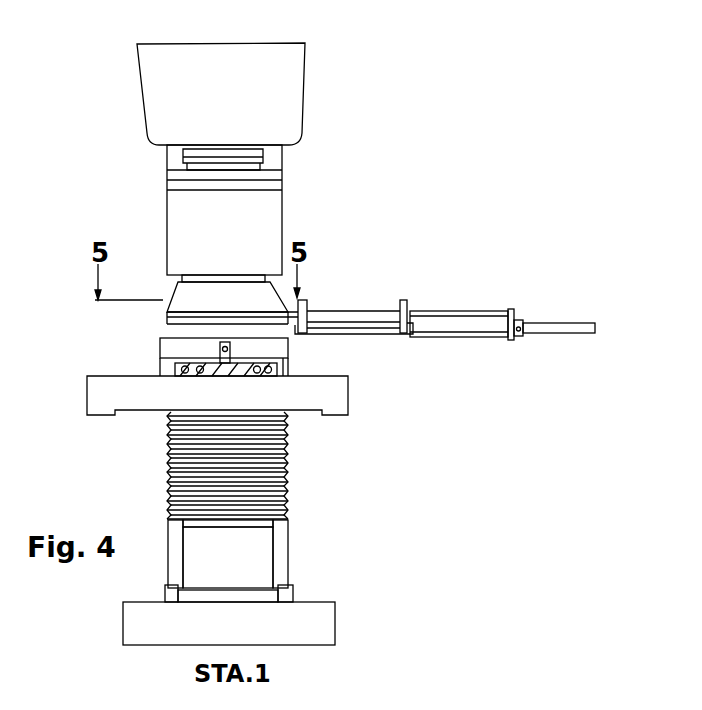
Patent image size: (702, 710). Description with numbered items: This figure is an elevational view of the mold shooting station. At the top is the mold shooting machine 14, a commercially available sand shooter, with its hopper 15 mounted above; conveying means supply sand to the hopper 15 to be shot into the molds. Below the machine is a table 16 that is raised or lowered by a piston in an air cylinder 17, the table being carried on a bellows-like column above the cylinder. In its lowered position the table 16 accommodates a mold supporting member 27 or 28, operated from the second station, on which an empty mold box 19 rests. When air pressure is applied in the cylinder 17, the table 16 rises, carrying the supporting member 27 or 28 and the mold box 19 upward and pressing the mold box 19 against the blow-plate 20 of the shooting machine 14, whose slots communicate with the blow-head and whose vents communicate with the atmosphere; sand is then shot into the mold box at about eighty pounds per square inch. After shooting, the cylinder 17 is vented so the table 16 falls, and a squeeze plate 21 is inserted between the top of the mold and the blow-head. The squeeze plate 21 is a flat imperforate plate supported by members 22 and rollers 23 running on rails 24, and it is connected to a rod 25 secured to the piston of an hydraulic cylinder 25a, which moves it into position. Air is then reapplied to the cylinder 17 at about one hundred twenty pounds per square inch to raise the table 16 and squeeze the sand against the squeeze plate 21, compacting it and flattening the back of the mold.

The mold shooting machine 14 is at (268, 227).
The hopper 15 is at (295, 98).
The table 16 is at (338, 402).
The air cylinder 17 is at (252, 557).
The mold box 19 is at (287, 348).
The blow-plate 20 is at (258, 302).
The squeeze plate 21 is at (358, 328).
The supporting members 22 is at (307, 322).
The rollers 23 is at (307, 300).
The rails 24 is at (460, 310).
The rod 25 is at (413, 334).
The hydraulic cylinder 25a is at (550, 337).
The mold supporting member 27 is at (292, 373).
The mold supporting member 28 is at (280, 364).